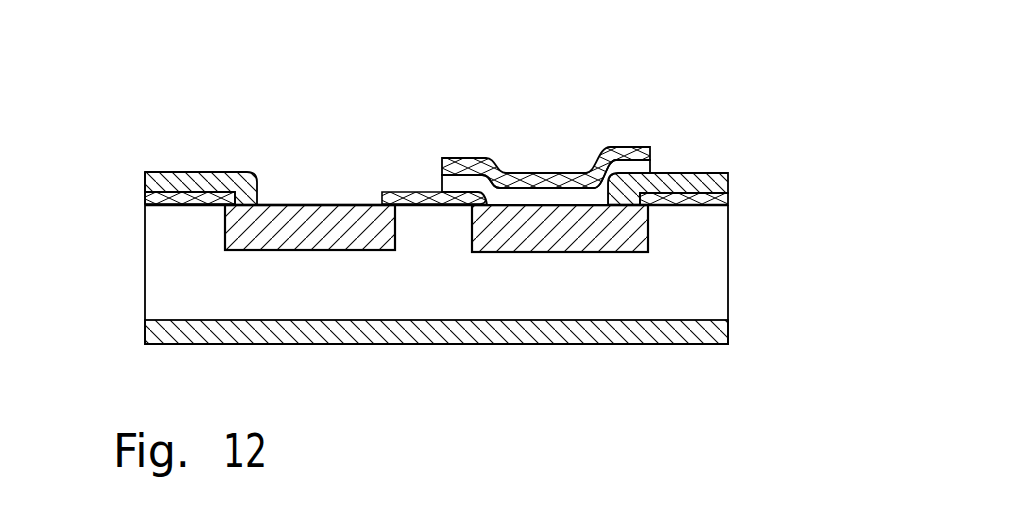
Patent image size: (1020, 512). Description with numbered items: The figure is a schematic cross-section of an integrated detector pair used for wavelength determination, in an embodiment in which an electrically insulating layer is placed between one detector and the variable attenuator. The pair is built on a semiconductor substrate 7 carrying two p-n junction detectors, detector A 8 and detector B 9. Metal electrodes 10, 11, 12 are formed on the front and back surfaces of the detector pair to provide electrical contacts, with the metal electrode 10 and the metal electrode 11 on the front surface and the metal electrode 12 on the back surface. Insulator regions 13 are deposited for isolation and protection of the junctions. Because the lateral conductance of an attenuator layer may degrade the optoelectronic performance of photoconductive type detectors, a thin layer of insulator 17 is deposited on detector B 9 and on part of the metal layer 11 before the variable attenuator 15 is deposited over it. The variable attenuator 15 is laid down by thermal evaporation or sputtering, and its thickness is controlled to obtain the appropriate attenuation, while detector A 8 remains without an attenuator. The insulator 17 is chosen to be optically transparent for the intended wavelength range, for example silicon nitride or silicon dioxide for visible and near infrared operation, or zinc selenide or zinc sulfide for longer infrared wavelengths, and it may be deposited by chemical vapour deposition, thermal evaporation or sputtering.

The semiconductor substrate 7 is at (145, 287).
The detector A 8 is at (257, 222).
The detector B 9 is at (508, 228).
The metal electrode 10 is at (145, 181).
The metal electrode 11 is at (729, 178).
The metal electrode 12 is at (145, 330).
The insulator region 13 is at (729, 198).
The variable attenuator 15 is at (552, 177).
The insulator layer 17 is at (570, 198).